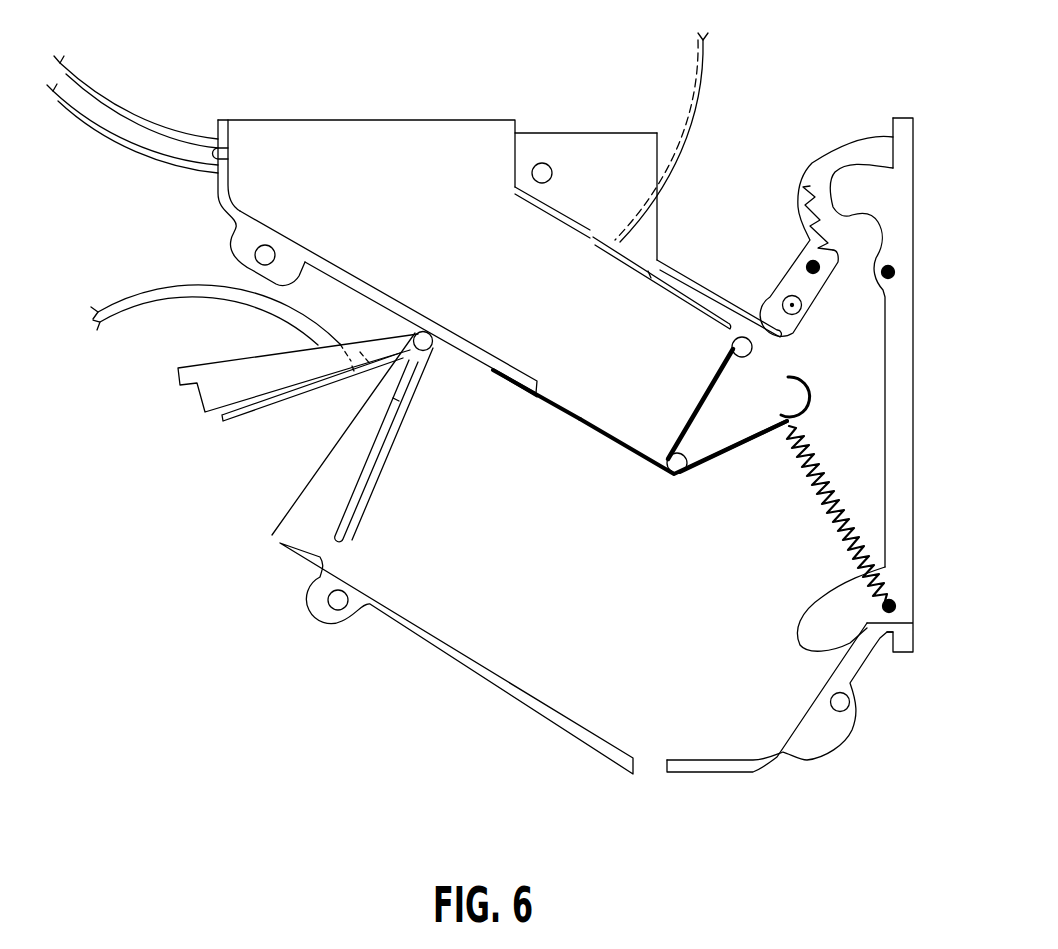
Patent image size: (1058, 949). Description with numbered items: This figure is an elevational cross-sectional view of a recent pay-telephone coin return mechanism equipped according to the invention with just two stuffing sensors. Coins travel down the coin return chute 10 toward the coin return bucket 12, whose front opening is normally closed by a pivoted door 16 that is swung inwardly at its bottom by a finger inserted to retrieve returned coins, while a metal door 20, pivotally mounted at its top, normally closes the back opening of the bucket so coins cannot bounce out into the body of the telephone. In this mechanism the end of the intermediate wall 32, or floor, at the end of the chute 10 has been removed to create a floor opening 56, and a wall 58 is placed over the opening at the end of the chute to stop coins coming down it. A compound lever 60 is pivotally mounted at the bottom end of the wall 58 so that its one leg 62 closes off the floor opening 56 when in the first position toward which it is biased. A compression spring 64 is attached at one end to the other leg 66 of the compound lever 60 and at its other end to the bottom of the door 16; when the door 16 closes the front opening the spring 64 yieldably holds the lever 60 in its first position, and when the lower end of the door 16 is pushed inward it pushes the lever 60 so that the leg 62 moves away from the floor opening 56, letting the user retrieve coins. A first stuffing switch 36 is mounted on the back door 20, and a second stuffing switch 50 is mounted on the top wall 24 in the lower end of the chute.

The coin return chute 10 is at (477, 294).
The coin return bucket 12 is at (586, 607).
The door 16 is at (907, 408).
The metal door 20 is at (212, 395).
The top wall 24 is at (598, 232).
The intermediate wall 32 is at (372, 285).
The first stuffing switch 36 is at (253, 418).
The second stuffing switch 50 is at (617, 267).
The floor opening 56 is at (540, 388).
The wall 58 is at (693, 400).
The compound lever 60 is at (623, 449).
The one leg 62 is at (556, 410).
The compression spring 64 is at (828, 500).
The other leg 66 is at (748, 437).